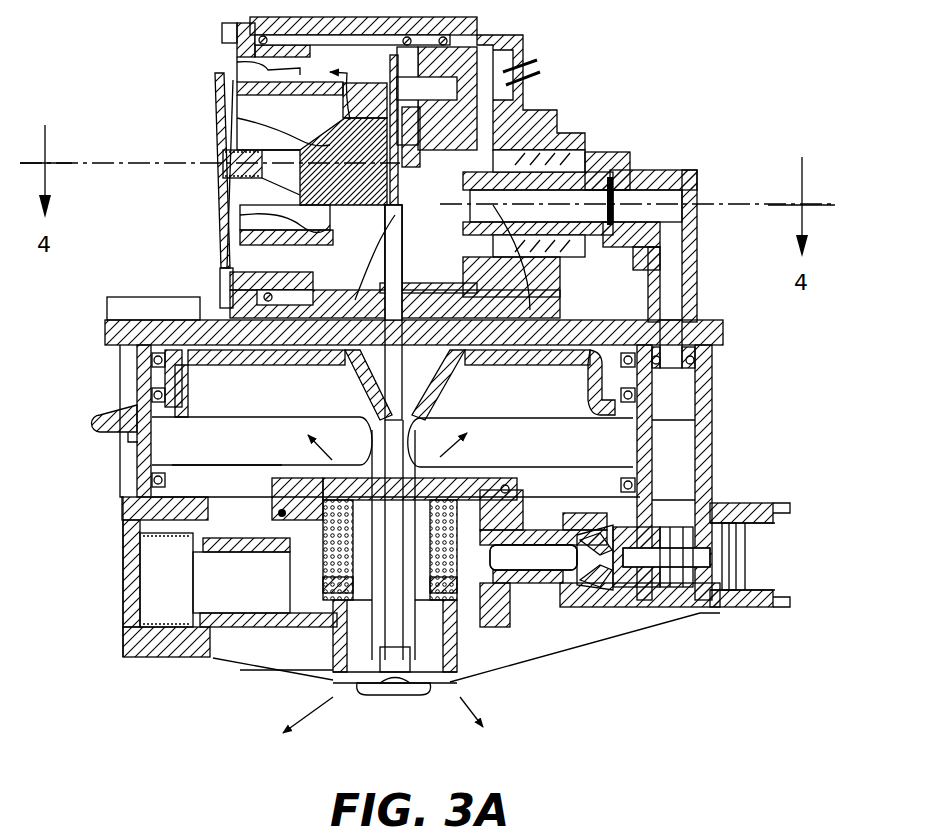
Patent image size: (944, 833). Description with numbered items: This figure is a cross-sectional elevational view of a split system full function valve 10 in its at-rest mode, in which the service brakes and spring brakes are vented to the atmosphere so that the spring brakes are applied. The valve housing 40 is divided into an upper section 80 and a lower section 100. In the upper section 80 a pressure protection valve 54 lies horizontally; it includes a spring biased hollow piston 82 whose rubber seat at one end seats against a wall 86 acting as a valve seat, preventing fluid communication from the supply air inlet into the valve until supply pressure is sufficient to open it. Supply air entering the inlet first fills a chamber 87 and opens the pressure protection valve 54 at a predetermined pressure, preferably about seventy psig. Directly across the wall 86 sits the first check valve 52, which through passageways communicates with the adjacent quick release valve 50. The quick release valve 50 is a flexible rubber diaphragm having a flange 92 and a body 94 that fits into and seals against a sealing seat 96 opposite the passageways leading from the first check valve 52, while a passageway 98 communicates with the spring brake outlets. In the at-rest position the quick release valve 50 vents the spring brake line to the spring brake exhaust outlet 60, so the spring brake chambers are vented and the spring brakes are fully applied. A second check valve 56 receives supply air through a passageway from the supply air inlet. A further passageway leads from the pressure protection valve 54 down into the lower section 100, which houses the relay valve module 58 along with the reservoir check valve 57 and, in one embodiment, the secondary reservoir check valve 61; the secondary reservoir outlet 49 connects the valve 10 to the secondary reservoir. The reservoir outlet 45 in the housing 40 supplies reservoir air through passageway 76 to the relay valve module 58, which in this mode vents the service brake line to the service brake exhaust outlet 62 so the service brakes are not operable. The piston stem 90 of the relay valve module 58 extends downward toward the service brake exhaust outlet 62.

The full-function valve 10 is at (603, 645).
The valve housing 40 is at (163, 650).
The reservoir outlet 45 is at (123, 578).
The secondary reservoir outlet 49 is at (735, 525).
The quick release valve 50 is at (218, 173).
The first check valve 52 is at (530, 140).
The pressure protection valve 54 is at (600, 152).
The second check valve 56 is at (503, 72).
The reservoir check valve 57 is at (585, 545).
The relay valve module 58 is at (443, 382).
The spring brake exhaust outlet 60 is at (214, 95).
The secondary reservoir check valve 61 is at (717, 557).
The service brake exhaust outlet 62 is at (416, 681).
The passageway 76 is at (537, 557).
The upper section 80 is at (222, 35).
The spring biased hollow piston 82 is at (637, 164).
The wall 86 is at (528, 308).
The chamber 87 is at (523, 110).
The piston stem 90 is at (351, 681).
The flange 92 is at (365, 290).
The body 94 is at (307, 190).
The sealing seat 96 is at (317, 127).
The passageway 98 is at (183, 78).
The lower section 100 is at (720, 433).